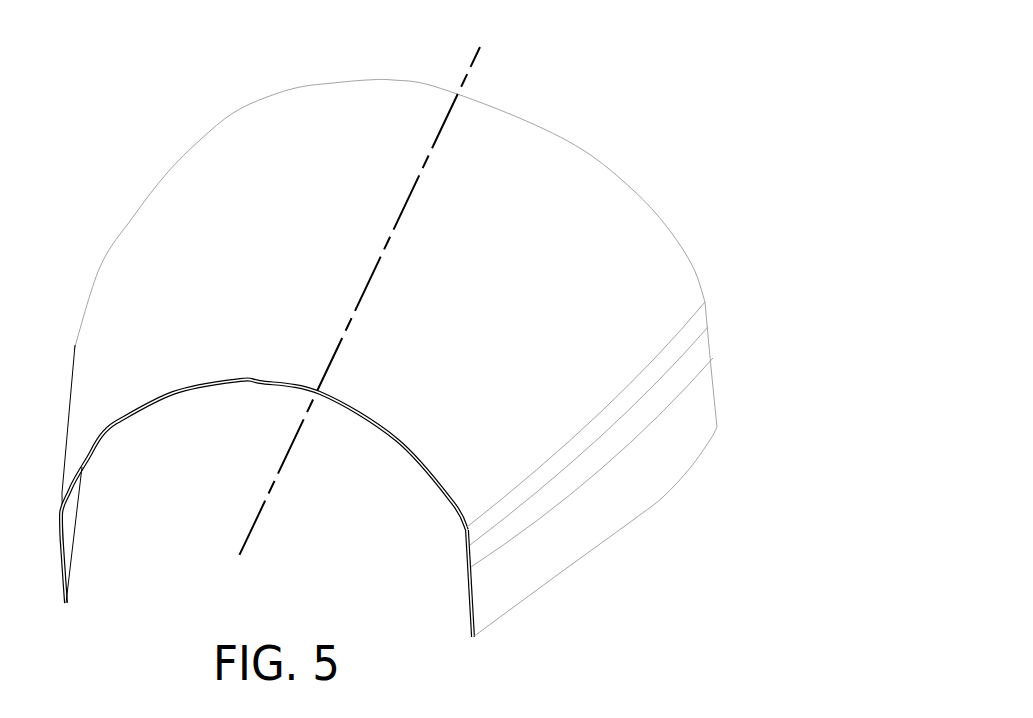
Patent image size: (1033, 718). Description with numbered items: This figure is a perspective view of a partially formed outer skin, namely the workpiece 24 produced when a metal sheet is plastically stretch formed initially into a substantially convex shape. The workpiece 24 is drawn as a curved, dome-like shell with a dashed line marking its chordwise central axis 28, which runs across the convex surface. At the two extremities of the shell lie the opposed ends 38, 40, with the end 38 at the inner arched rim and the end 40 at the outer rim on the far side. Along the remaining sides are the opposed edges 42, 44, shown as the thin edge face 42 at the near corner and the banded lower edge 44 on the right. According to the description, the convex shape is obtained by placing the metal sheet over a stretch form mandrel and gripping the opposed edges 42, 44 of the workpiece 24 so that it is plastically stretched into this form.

The workpiece 24 is at (540, 215).
The chordwise central axis 28 is at (470, 65).
The end 38 is at (397, 440).
The end 40 is at (677, 240).
The edge 42 is at (77, 558).
The edge 44 is at (665, 497).